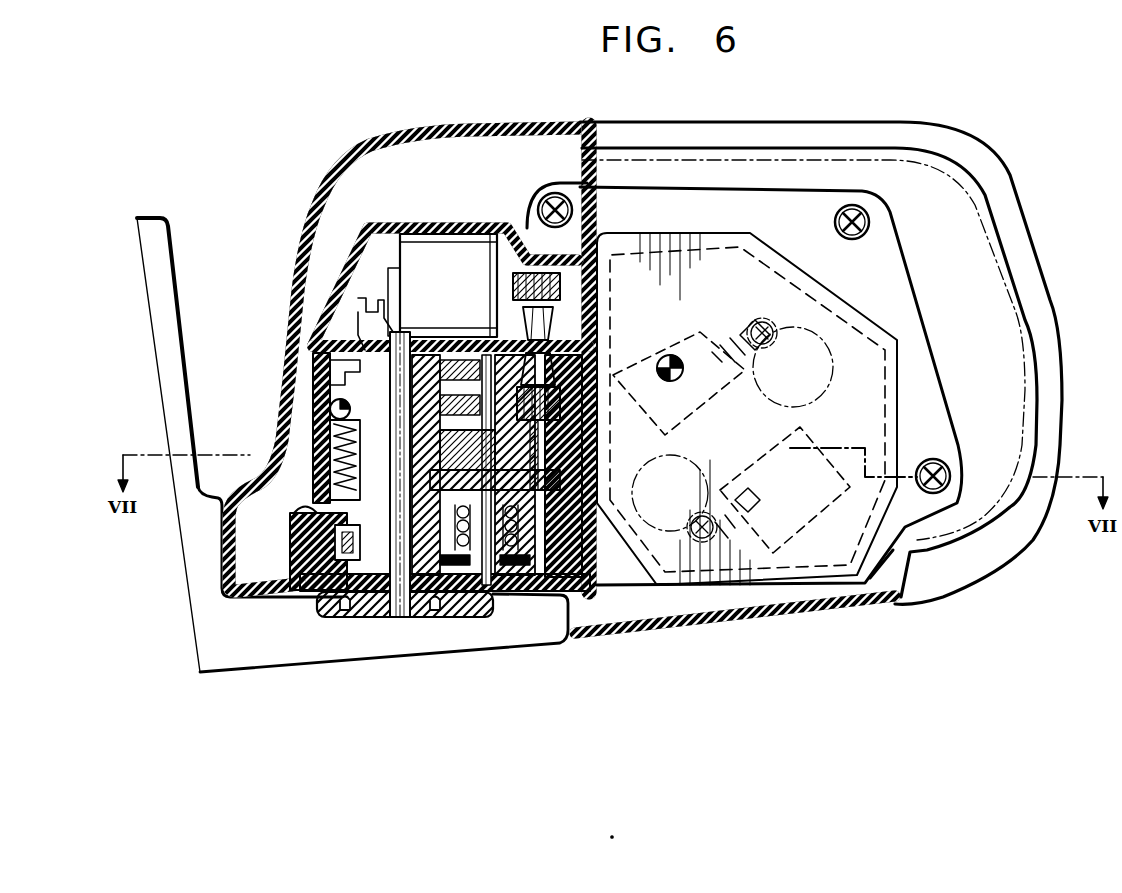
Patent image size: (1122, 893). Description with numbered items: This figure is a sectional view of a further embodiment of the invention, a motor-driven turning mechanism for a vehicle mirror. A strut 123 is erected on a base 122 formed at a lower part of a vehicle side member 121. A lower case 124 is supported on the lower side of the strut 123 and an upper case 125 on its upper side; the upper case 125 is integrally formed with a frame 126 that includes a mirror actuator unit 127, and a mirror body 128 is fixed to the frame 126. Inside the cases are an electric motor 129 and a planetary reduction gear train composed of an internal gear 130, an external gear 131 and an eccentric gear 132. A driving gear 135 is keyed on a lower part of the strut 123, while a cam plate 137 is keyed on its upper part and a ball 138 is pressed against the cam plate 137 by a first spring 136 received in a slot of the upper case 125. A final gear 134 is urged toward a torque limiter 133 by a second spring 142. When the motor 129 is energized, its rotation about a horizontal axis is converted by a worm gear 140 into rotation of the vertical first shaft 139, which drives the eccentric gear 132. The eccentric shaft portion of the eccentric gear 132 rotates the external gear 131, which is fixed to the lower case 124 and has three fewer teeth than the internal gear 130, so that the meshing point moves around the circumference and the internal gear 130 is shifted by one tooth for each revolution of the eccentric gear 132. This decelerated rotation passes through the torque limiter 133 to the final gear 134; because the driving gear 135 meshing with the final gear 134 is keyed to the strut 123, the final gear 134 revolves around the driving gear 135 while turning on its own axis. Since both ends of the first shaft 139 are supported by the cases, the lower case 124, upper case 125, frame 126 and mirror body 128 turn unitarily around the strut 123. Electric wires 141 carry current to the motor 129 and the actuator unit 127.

The vehicle side member 121 is at (160, 265).
The base 122 is at (473, 617).
The strut 123 is at (418, 590).
The lower case 124 is at (282, 587).
The upper case 125 is at (320, 438).
The frame 126 is at (812, 190).
The mirror actuator unit 127 is at (805, 312).
The mirror body 128 is at (553, 125).
The electric motor 129 is at (438, 248).
The internal gear 130 is at (590, 466).
The external gear 131 is at (590, 442).
The eccentric gear 132 is at (590, 402).
The torque limiter 133 is at (590, 492).
The final gear 134 is at (582, 547).
The driving gear 135 is at (302, 548).
The first spring 136 is at (318, 465).
The cam plate 137 is at (327, 395).
The ball 138 is at (320, 410).
The first shaft 139 is at (487, 345).
The worm gear 140 is at (522, 235).
The electric wires 141 is at (372, 310).
The second spring 142 is at (520, 562).